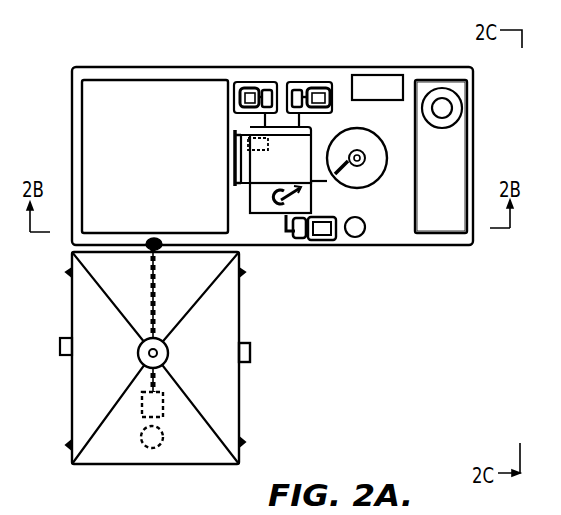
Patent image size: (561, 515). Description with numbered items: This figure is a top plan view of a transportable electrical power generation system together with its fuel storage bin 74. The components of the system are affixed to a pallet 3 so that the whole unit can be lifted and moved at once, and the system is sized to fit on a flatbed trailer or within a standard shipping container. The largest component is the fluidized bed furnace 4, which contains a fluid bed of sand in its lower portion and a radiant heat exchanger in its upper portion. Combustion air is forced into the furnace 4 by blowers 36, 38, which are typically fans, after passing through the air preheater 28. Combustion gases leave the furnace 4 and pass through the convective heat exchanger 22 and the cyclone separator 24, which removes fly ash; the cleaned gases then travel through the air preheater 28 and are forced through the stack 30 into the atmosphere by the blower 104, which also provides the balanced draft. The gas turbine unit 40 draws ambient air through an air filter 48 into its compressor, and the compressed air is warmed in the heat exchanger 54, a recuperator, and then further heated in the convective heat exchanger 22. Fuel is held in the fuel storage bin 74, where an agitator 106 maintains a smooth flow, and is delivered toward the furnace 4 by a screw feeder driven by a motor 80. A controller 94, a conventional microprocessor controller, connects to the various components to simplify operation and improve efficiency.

The fluidized bed furnace 4 is at (100, 110).
The blower 36 is at (245, 82).
The blower 38 is at (320, 82).
The controller 94 is at (393, 85).
The heat exchanger 54 is at (461, 105).
The convective heat exchanger 22 is at (306, 145).
The cyclone separator 24 is at (382, 127).
The air preheater 28 is at (255, 213).
The blower 104 is at (300, 247).
The stack 30 is at (355, 238).
The pallet 3 is at (417, 245).
The gas turbine unit 40 is at (453, 240).
The air filter 48 is at (157, 288).
The agitator 106 is at (250, 352).
The fuel storage bin 74 is at (70, 418).
The motor 80 is at (163, 437).